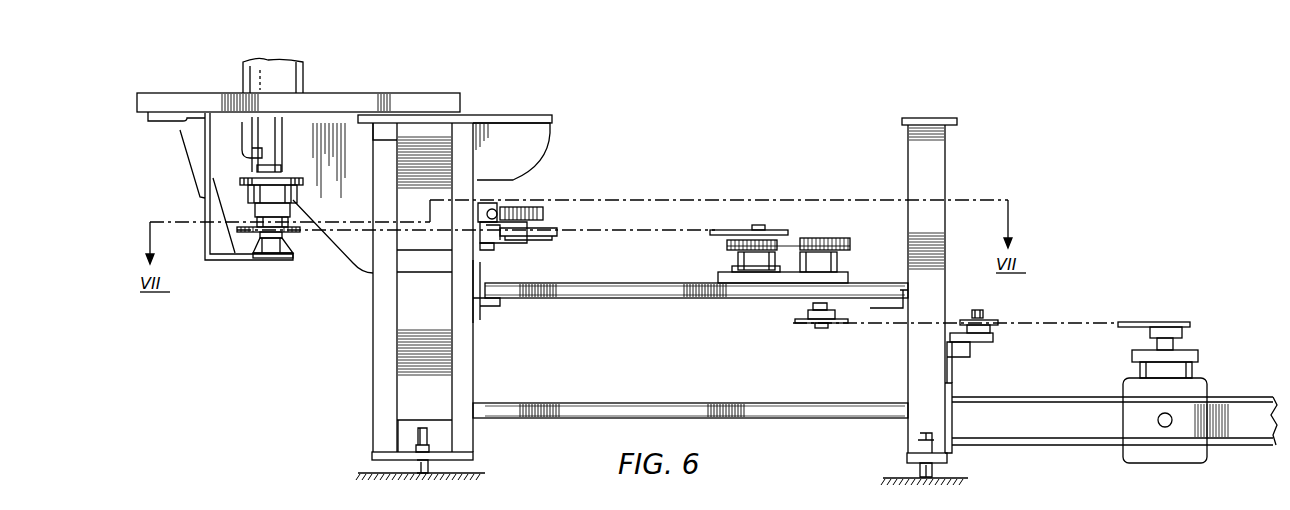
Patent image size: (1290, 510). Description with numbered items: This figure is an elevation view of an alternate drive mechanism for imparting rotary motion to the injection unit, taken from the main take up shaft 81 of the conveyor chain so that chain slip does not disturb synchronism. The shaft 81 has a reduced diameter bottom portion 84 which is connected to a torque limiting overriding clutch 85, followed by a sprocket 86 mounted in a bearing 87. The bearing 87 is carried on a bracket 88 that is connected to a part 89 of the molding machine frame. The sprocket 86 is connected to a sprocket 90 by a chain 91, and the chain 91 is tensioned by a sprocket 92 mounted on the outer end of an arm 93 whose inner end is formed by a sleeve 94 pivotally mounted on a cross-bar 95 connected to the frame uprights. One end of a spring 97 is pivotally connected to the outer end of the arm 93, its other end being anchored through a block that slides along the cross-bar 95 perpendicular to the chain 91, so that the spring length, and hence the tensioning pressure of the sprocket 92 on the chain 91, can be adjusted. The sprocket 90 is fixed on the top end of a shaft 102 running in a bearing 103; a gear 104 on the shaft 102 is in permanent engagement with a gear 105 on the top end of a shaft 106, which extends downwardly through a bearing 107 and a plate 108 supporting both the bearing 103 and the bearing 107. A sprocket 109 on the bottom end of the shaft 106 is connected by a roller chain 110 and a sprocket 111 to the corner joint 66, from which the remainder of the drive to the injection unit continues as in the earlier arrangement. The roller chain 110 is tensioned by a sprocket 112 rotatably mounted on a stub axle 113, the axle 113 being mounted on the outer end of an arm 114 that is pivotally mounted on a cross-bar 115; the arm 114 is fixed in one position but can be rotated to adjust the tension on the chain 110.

The corner joint 66 is at (1205, 392).
The main take up shaft 81 is at (304, 75).
The reduced diameter bottom portion 84 is at (265, 157).
The torque limiting overriding clutch 85 is at (250, 193).
The sprocket 86 is at (245, 233).
The bearing 87 is at (280, 256).
The bracket 88 is at (205, 242).
The part of the molding machine frame 89 is at (157, 104).
The sprocket 90 is at (782, 232).
The chain 91 is at (720, 230).
The sprocket 92 is at (550, 238).
The arm 93 is at (508, 244).
The sleeve 94 is at (478, 246).
The cross-bar 95 is at (487, 205).
The spring 97 is at (545, 216).
The shaft 102 is at (740, 262).
The bearing 103 is at (760, 283).
The gear 104 is at (727, 246).
The gear 105 is at (842, 245).
The shaft 106 is at (808, 322).
The bearing 107 is at (838, 264).
The plate 108 is at (735, 283).
The sprocket 109 is at (826, 329).
The roller chain 110 is at (846, 324).
The sprocket 111 is at (1188, 328).
The sprocket 112 is at (990, 320).
The stub axle 113 is at (975, 310).
The arm 114 is at (968, 342).
The cross-bar 115 is at (952, 358).